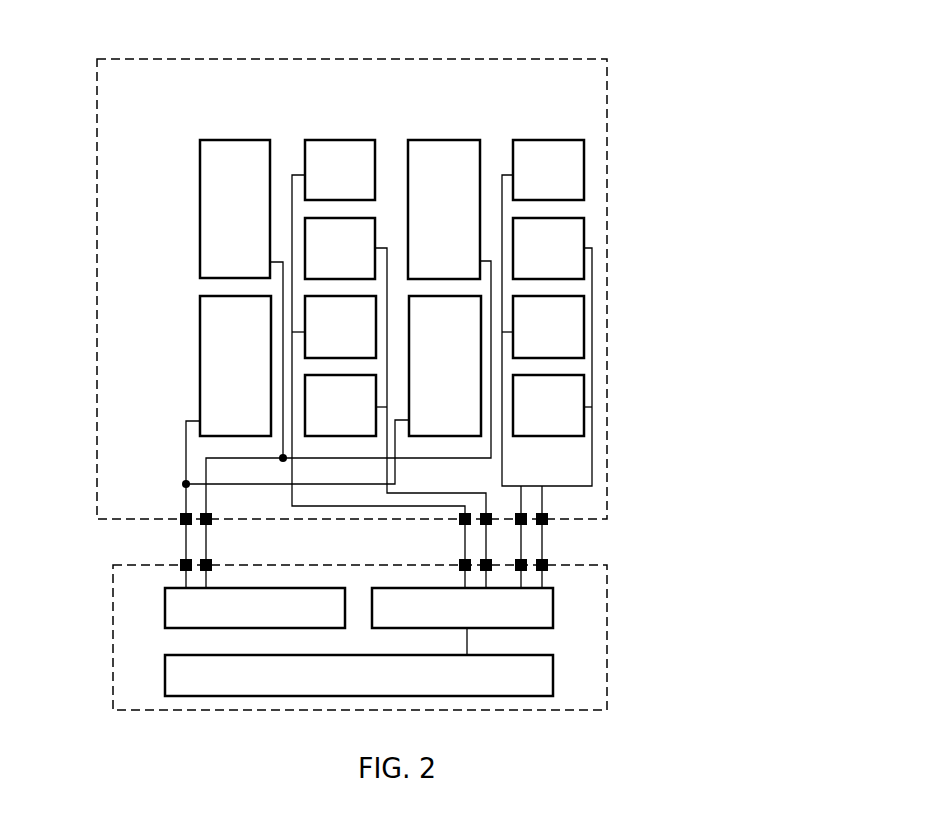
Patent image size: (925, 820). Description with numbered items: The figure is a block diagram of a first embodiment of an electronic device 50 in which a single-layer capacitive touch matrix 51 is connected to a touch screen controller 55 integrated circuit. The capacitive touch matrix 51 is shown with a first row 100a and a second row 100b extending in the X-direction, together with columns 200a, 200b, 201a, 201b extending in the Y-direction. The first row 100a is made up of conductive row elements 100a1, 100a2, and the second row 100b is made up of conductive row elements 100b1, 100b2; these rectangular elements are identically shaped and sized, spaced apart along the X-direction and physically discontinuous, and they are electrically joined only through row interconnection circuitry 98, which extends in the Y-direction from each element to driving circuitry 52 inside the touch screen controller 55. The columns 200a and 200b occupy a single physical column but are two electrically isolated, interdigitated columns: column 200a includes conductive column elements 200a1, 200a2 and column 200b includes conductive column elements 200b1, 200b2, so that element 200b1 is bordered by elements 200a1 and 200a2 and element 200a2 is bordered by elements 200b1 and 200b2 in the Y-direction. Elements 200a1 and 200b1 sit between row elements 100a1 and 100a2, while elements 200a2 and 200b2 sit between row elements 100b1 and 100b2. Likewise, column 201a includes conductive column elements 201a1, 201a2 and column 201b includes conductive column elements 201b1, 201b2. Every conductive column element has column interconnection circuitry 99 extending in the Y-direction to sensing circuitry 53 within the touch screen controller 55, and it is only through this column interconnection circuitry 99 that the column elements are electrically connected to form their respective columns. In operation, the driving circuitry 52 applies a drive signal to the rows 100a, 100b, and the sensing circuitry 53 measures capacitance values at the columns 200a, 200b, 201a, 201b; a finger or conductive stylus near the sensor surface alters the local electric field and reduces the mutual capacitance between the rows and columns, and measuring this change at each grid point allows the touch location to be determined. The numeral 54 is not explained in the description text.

The electronic device 50 is at (65, 45).
The capacitive touch matrix 51 is at (98, 238).
The driving circuitry 52 is at (163, 605).
The sensing circuitry 53 is at (554, 603).
The processing circuitry 54 is at (163, 672).
The touch screen controller 55 is at (208, 712).
The row interconnection circuitry 98 is at (172, 463).
The column interconnection circuitry 99 is at (330, 527).
The first row 100a is at (186, 200).
The second row 100b is at (186, 362).
The conductive row element 100a1 is at (235, 209).
The conductive row element 100a2 is at (444, 209).
The conductive row element 100b1 is at (235, 366).
The conductive row element 100b2 is at (445, 366).
The column 200a is at (338, 124).
The column 200b is at (346, 254).
The conductive column element 200a1 is at (340, 170).
The conductive column element 200a2 is at (340, 327).
The conductive column element 200b1 is at (340, 248).
The conductive column element 200b2 is at (340, 405).
The column 201a is at (548, 124).
The column 201b is at (554, 254).
The conductive column element 201a1 is at (548, 170).
The conductive column element 201a2 is at (548, 327).
The conductive column element 201b1 is at (548, 248).
The conductive column element 201b2 is at (548, 405).